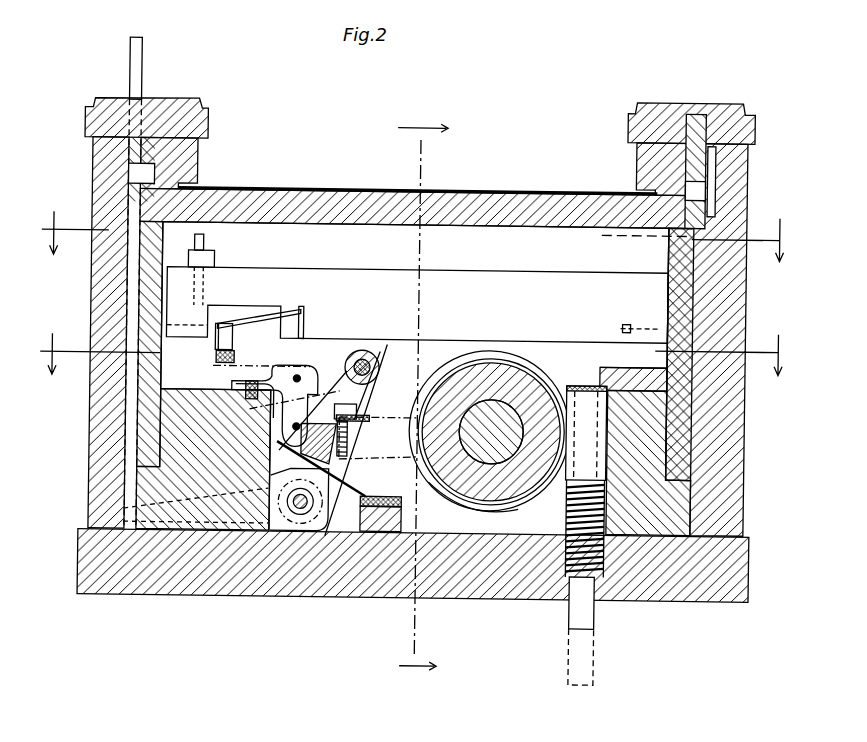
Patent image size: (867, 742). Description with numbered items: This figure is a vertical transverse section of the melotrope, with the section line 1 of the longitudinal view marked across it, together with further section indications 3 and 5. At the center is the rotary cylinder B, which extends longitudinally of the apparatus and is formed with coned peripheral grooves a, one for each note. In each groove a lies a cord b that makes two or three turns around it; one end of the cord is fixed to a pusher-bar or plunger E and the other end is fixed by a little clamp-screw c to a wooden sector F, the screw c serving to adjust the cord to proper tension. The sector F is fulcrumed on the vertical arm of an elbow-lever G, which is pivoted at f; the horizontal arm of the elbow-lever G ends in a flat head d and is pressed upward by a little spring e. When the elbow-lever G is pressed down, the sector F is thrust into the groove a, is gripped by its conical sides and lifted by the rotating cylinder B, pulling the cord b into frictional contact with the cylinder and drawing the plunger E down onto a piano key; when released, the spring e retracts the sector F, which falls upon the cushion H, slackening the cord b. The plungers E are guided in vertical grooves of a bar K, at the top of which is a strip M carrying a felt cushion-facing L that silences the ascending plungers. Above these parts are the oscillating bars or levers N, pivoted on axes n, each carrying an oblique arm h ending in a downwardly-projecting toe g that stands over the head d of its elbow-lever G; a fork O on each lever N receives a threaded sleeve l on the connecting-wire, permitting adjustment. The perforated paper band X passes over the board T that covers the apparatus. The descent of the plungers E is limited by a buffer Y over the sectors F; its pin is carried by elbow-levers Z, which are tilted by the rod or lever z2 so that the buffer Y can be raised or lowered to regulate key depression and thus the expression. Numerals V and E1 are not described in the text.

The rod or lever z2 is at (146, 282).
The band of perforated paper or card-board X is at (417, 179).
The board T is at (416, 208).
The oscillating bar or lever N is at (417, 305).
The threaded sleeve l is at (193, 248).
The fork O is at (209, 249).
The axis n is at (413, 319).
The arm h is at (260, 321).
The toe g is at (215, 352).
The flat head d is at (255, 359).
The elbow-lever G is at (274, 401).
The pivot f is at (299, 387).
The spring e is at (254, 396).
The buffer Y is at (355, 364).
The lever V is at (335, 435).
The clamp-screw c is at (309, 418).
The wooden sector F is at (378, 438).
The rotary cylinder B is at (491, 432).
The peripheral groove a is at (489, 425).
The cord b is at (475, 502).
The cushion-facing L is at (625, 366).
The strip M is at (633, 355).
The pusher-bar or plunger E is at (586, 433).
The bar K is at (649, 462).
The elbow-lever Z is at (299, 499).
The cushion H is at (380, 514).
The screw stem E1 is at (575, 583).
The line 1 1 is at (420, 397).
The section line 3 is at (414, 236).
The section line 5 is at (414, 354).